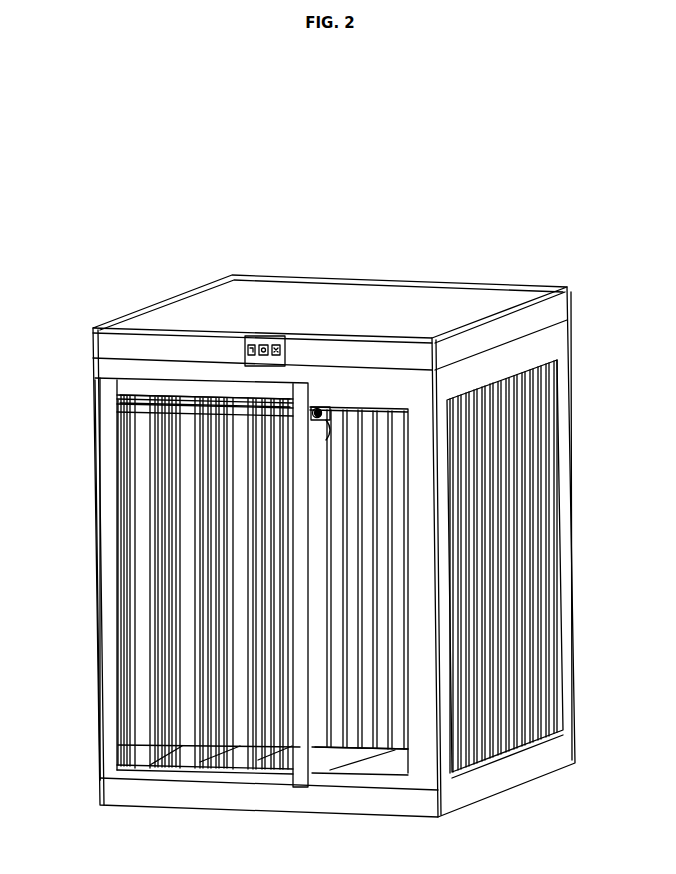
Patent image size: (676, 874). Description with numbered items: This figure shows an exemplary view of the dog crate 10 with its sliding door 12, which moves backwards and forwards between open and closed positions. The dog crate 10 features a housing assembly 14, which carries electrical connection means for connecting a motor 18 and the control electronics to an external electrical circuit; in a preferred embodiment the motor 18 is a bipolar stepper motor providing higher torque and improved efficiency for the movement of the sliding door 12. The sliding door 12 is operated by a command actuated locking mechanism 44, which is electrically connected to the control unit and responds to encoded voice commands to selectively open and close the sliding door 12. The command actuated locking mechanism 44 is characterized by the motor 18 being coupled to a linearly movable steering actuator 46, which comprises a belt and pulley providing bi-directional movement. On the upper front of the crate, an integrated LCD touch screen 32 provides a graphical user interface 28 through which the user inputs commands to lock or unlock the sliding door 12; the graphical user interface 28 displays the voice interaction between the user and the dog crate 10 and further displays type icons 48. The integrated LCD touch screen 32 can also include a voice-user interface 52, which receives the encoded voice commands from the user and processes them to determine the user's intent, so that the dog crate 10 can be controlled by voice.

The dog crate 10 is at (188, 246).
The sliding door 12 is at (305, 787).
The housing assembly 14 is at (107, 553).
The motor 18 is at (328, 407).
The graphical user interface 28 is at (266, 330).
The integrated LCD touch screen 32 is at (246, 346).
The command actuated locking mechanism 44 is at (317, 412).
The linearly movable steering actuator 46 is at (122, 410).
The type icons 48 is at (262, 346).
The voice-user interface 52 is at (284, 346).